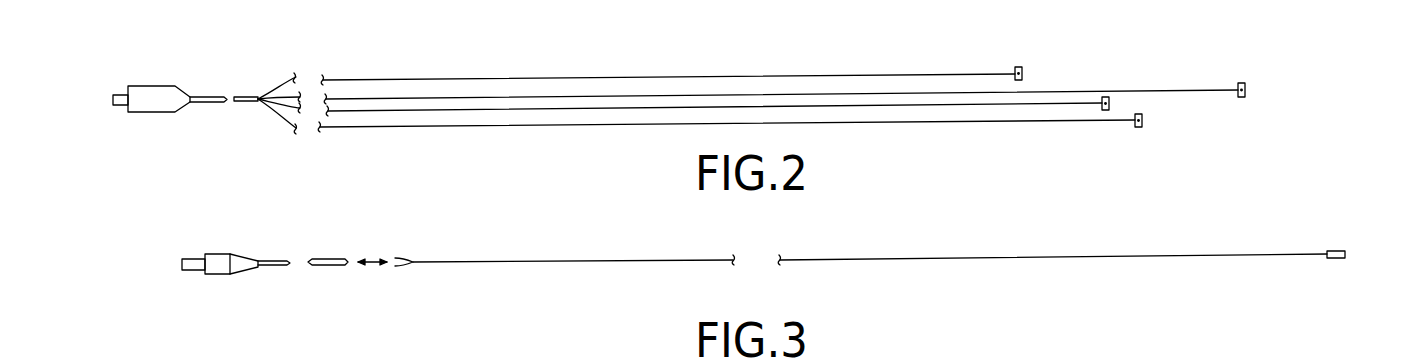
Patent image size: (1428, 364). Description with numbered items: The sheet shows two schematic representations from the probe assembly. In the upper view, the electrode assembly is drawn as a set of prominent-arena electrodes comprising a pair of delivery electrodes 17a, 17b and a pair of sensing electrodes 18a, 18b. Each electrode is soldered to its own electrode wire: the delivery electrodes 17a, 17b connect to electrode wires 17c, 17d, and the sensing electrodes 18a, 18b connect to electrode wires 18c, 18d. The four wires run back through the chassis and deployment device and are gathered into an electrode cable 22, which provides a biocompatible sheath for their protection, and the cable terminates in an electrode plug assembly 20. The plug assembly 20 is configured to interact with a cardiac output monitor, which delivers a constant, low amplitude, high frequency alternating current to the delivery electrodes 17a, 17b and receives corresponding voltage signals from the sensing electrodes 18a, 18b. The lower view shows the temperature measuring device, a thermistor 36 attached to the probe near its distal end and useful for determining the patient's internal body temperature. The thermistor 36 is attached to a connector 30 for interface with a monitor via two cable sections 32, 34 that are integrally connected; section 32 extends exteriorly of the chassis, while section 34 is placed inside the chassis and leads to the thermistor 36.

In FIG. 2, the electrode plug assembly 20 is at (158, 93).
In FIG. 2, the electrode cable 22 is at (247, 95).
In FIG. 2, the delivery electrode 17a is at (1022, 73).
In FIG. 2, the delivery electrode 17b is at (1245, 88).
In FIG. 2, the electrode wire 17c is at (715, 77).
In FIG. 2, the electrode wire 17d is at (818, 93).
In FIG. 2, the sensing electrode 18a is at (1109, 103).
In FIG. 2, the sensing electrode 18b is at (1142, 125).
In FIG. 2, the electrode wire 18c is at (905, 106).
In FIG. 2, the electrode wire 18d is at (1033, 121).
In FIG. 3, the connector 30 is at (213, 261).
In FIG. 3, the cable section 32 is at (325, 259).
In FIG. 3, the cable section 34 is at (845, 255).
In FIG. 3, the temperature measuring device 36 is at (1345, 254).